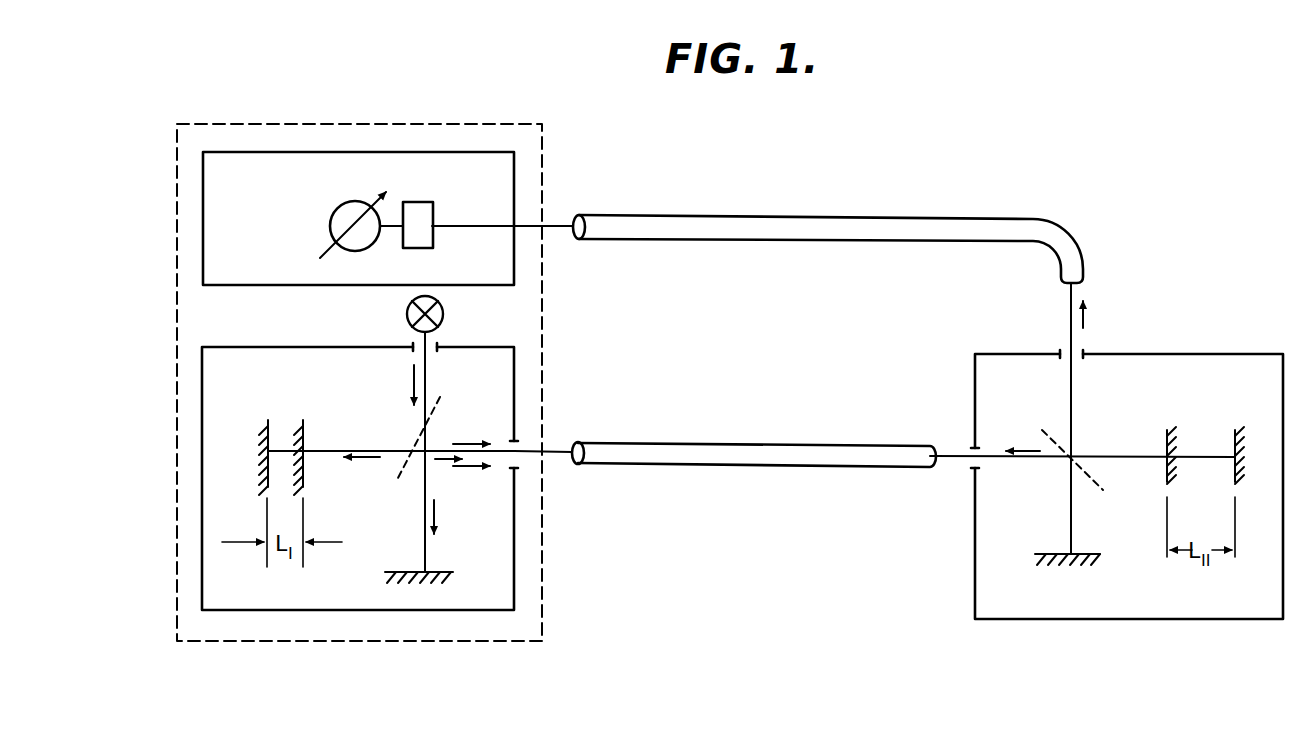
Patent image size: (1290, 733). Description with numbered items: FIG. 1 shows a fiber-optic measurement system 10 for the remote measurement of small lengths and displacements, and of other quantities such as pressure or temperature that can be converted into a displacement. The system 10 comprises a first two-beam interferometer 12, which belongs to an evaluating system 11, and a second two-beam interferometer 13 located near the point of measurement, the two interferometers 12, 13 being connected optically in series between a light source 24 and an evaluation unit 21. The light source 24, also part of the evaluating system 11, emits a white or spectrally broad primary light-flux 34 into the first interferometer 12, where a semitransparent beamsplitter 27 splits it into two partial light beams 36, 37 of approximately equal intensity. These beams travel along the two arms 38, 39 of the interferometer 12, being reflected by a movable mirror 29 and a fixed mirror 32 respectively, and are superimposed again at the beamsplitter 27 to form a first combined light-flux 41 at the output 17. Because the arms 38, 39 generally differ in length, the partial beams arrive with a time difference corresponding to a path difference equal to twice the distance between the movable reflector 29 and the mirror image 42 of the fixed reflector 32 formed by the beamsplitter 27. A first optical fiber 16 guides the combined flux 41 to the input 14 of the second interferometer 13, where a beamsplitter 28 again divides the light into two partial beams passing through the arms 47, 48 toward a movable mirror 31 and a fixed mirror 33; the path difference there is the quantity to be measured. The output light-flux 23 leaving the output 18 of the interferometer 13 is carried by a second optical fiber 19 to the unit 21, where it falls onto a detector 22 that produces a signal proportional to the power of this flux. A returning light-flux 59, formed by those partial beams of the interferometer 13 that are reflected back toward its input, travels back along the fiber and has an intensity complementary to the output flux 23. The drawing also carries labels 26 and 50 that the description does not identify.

The fiber-optic system 10 is at (821, 184).
The evaluating system 11 is at (532, 319).
The first two-beam interferometer 12 is at (505, 398).
The second two-beam interferometer 13 is at (1196, 362).
The input of second interferometer 14 is at (968, 465).
The first optical fiber 16 is at (731, 465).
The output of first interferometer 17 is at (515, 458).
The output of second interferometer 18 is at (1062, 350).
The second optical fiber 19 is at (747, 233).
The evaluation unit 21 is at (507, 198).
The detector 22 is at (428, 215).
The output light-flux 23 is at (1084, 318).
The light source 24 is at (407, 314).
The housing aperture 26 is at (432, 344).
The beamsplitter 27 is at (432, 399).
The beamsplitter 28 is at (1053, 432).
The movable mirror 29 is at (271, 419).
The movable mirror 31 is at (1233, 443).
The fixed mirror 32 is at (447, 572).
The fixed mirror 33 is at (1083, 554).
The primary light-flux 34 is at (409, 385).
The partial light beam 36 is at (370, 458).
The partial light beam 37 is at (436, 512).
The arm of first interferometer 38 is at (335, 451).
The arm of first interferometer 39 is at (424, 552).
The first combined light-flux 41 is at (459, 444).
The mirror image of fixed reflector 42 is at (304, 468).
The arm of second interferometer 47 is at (1070, 500).
The arm of second interferometer 48 is at (1112, 456).
The partially reflecting mirror 50 is at (1165, 478).
The returning light-flux 59 is at (1022, 451).